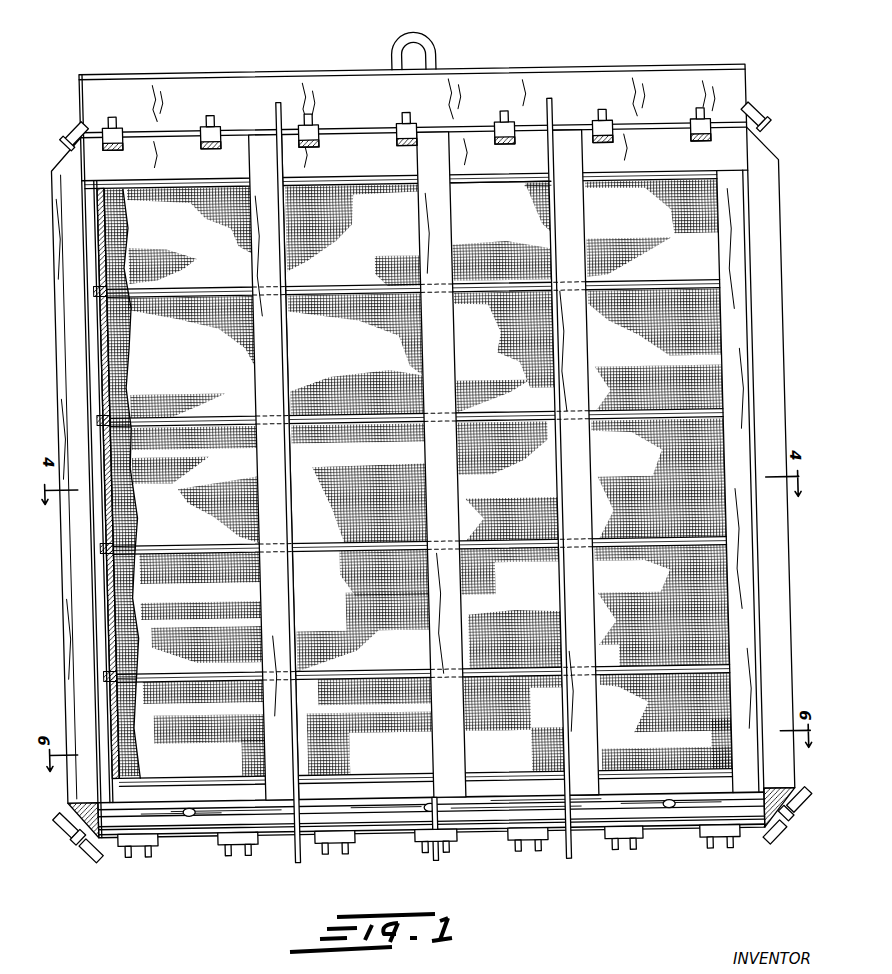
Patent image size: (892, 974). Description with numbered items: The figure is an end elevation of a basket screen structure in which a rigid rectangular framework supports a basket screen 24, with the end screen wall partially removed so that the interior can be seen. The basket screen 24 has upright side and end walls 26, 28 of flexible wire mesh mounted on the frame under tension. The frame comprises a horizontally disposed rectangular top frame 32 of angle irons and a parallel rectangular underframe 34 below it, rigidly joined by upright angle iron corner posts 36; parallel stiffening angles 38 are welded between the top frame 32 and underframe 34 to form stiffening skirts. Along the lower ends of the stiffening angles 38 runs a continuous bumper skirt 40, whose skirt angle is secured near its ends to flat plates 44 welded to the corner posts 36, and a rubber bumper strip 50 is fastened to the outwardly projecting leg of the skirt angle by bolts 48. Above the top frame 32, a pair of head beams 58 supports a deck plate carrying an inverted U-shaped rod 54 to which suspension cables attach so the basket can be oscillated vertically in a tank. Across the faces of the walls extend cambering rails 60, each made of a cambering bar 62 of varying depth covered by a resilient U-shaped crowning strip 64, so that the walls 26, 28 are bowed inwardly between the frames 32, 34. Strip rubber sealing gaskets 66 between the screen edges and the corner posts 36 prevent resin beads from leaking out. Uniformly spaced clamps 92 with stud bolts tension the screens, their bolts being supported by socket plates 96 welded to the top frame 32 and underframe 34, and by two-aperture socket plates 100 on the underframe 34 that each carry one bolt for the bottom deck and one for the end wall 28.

The basket screen 24 is at (712, 602).
The side wall 26 is at (121, 385).
The end wall 28 is at (120, 191).
The top frame 32 is at (168, 134).
The underframe 34 is at (472, 780).
The corner post 36 is at (738, 336).
The stiffening angle 38 is at (278, 124).
The bumper skirt 40 is at (51, 841).
The flat plate 44 is at (76, 806).
The bolt 48 is at (168, 811).
The rubber bumper strip 50 is at (188, 831).
The inverted U-shaped rod 54 is at (426, 50).
The head beam 58 is at (628, 81).
The cambering rail 60 is at (342, 189).
The cambering bar 62 is at (504, 190).
The crowning strip 64 is at (512, 194).
The sealing gasket 66 is at (60, 372).
The clamp 92 is at (72, 115).
The socket plate 96 is at (66, 146).
The socket plate 100 is at (128, 860).